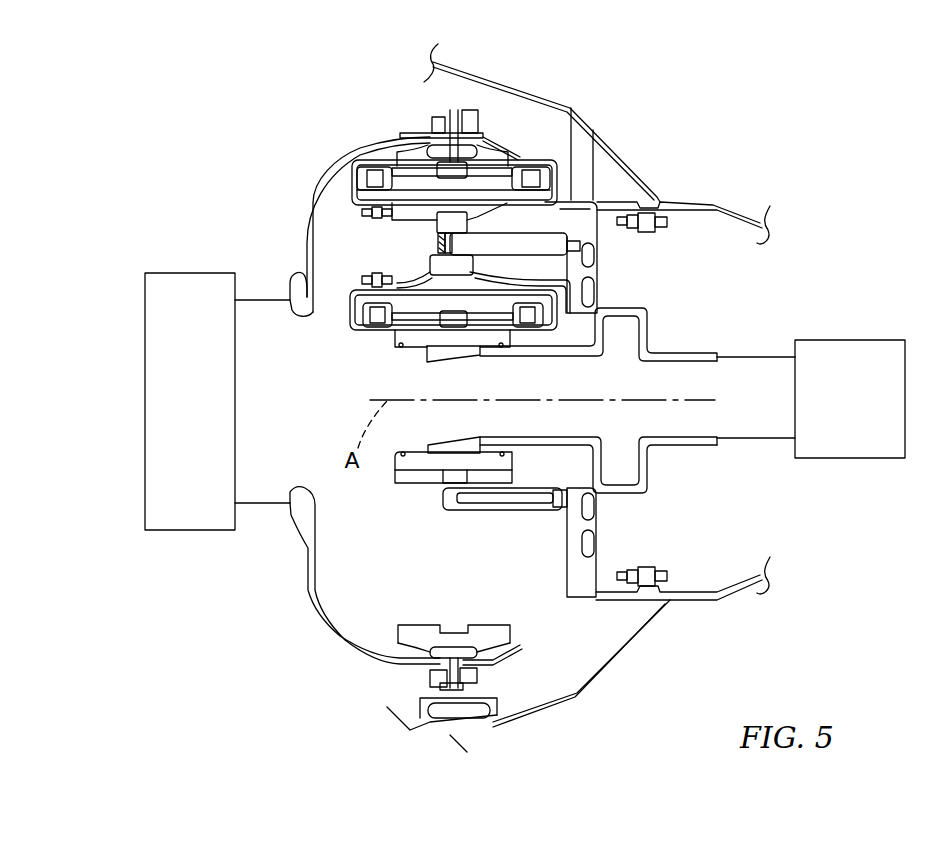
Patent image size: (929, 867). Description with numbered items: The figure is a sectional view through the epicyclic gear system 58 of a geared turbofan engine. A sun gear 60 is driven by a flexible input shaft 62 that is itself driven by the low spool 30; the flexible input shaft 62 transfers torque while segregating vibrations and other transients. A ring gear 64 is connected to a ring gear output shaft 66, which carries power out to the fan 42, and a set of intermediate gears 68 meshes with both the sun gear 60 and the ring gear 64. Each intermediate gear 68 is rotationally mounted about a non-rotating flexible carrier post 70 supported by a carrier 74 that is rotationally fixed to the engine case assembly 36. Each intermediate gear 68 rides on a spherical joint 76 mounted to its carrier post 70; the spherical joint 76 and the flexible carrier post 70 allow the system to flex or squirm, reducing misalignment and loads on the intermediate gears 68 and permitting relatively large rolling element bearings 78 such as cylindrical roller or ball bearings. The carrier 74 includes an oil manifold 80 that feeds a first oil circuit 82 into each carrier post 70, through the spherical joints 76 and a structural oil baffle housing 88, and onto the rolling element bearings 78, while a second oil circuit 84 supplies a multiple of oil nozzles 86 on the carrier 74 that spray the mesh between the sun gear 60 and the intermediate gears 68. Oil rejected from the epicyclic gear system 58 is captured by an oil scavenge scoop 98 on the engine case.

The low spool 30 is at (835, 408).
The engine case assembly 36 is at (735, 205).
The fan 42 is at (203, 409).
The epicyclic gear system 58 is at (845, 108).
The sun gear 60 is at (403, 480).
The flexible input shaft 62 is at (672, 357).
The ring gear 64 is at (483, 157).
The ring gear output shaft 66 is at (322, 176).
The intermediate gear 68 is at (416, 297).
The non-rotating flexible carrier post 70 is at (577, 223).
The carrier 74 is at (560, 192).
The spherical joint 76 is at (437, 250).
The rolling element bearing 78 is at (378, 172).
The oil manifold 80 is at (600, 268).
The first oil circuit 82 is at (588, 253).
The second oil circuit 84 is at (592, 508).
The oil nozzle 86 is at (503, 510).
The structural oil baffle housing 88 is at (352, 340).
The oil scavenge scoop 98 is at (463, 710).